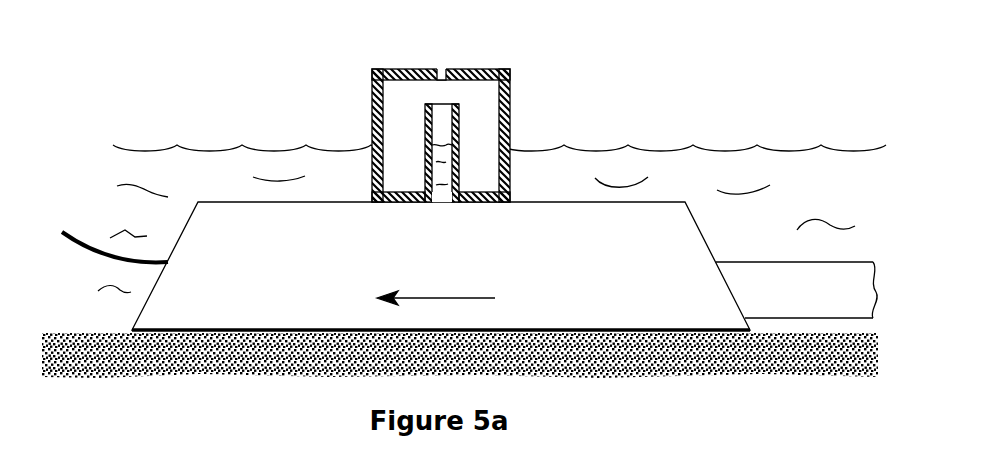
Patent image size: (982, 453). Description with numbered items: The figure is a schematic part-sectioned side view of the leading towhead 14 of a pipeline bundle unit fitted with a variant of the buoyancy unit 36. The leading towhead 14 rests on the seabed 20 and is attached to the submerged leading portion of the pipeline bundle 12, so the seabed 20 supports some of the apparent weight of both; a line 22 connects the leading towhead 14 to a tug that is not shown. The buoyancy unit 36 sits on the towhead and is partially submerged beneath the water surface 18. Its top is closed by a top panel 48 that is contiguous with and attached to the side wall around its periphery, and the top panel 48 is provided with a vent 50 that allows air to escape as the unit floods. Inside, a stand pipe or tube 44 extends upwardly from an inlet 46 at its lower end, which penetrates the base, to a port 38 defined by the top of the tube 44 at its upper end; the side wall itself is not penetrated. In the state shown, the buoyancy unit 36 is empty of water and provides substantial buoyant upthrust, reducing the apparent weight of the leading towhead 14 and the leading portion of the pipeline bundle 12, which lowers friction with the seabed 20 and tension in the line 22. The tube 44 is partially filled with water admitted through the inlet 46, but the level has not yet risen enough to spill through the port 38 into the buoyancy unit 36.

The pipeline bundle 12 is at (860, 272).
The leading towhead 14 is at (242, 230).
The surface 18 is at (715, 150).
The seabed 20 is at (63, 337).
The line 22 is at (76, 232).
The buoyancy unit 36 is at (479, 141).
The port 38 is at (436, 104).
The tube 44 is at (432, 150).
The inlet 46 is at (440, 197).
The top panel 48 is at (481, 69).
The vent 50 is at (442, 69).